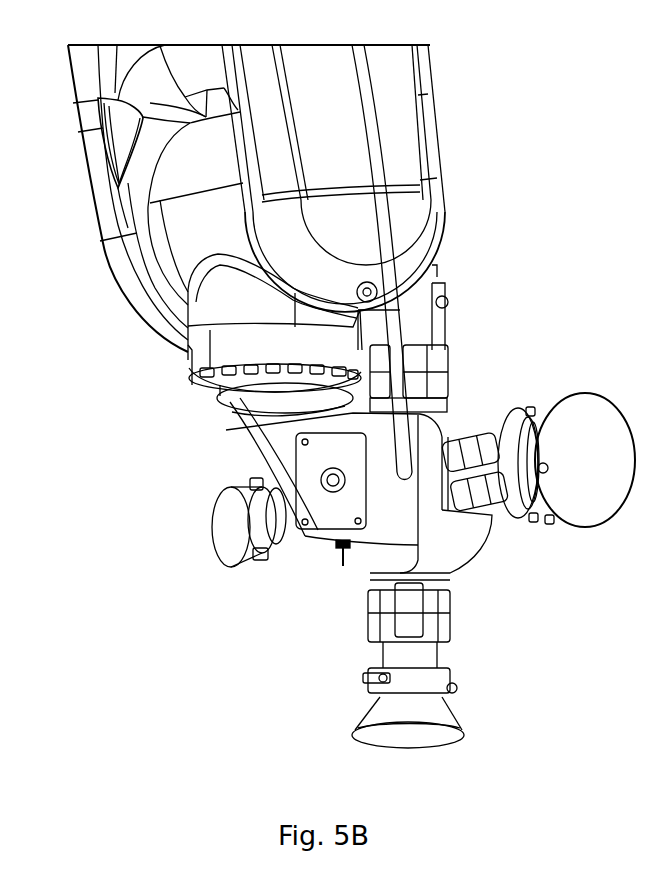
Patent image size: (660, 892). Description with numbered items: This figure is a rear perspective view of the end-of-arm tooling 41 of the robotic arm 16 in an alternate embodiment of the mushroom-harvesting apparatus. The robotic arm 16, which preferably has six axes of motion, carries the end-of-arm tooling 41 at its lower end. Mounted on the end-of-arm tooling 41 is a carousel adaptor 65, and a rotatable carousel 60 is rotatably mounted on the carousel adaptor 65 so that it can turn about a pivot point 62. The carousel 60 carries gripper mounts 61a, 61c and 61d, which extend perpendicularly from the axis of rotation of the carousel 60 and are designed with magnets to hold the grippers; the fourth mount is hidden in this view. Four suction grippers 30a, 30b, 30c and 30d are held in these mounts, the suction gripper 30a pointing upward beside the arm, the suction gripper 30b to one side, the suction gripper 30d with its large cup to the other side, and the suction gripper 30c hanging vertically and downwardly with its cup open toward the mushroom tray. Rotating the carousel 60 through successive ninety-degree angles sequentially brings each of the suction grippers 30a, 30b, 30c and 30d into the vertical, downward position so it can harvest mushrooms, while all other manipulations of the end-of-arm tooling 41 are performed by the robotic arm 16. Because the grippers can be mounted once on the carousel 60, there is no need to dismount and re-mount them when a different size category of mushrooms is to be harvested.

The robotic arm 16 is at (402, 134).
The end-of-arm tooling 41 is at (203, 353).
The carousel 60 is at (457, 538).
The carousel adaptor 65 is at (363, 455).
The pivot point 62 is at (328, 480).
The suction gripper 30a is at (420, 327).
The gripper mount 61a is at (443, 385).
The gripper mount 61d is at (462, 450).
The suction gripper 30d is at (485, 453).
The suction gripper 30b is at (230, 522).
The gripper mount 61c is at (440, 600).
The suction gripper 30c is at (422, 648).